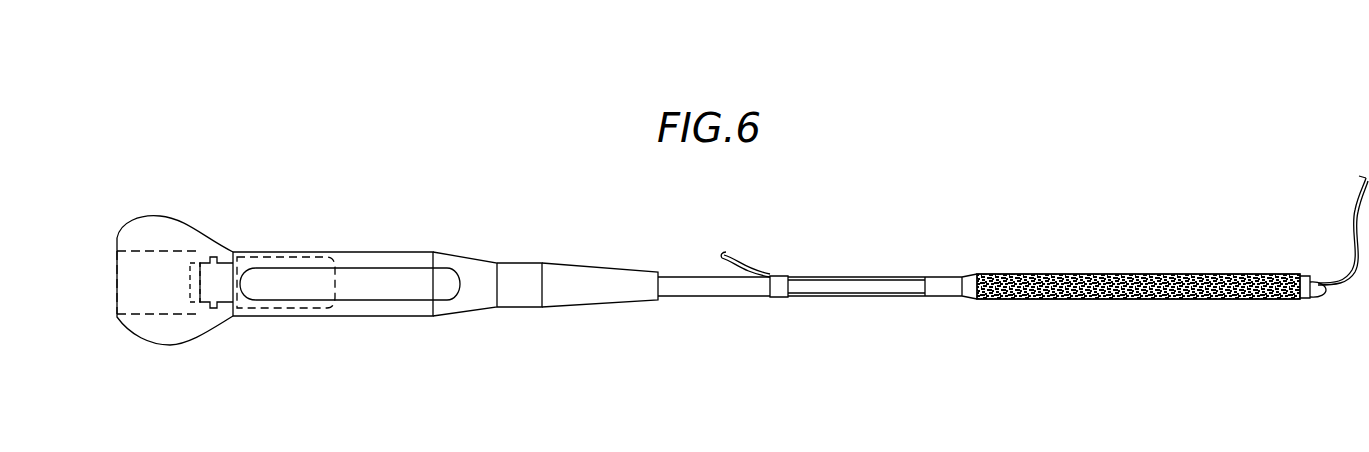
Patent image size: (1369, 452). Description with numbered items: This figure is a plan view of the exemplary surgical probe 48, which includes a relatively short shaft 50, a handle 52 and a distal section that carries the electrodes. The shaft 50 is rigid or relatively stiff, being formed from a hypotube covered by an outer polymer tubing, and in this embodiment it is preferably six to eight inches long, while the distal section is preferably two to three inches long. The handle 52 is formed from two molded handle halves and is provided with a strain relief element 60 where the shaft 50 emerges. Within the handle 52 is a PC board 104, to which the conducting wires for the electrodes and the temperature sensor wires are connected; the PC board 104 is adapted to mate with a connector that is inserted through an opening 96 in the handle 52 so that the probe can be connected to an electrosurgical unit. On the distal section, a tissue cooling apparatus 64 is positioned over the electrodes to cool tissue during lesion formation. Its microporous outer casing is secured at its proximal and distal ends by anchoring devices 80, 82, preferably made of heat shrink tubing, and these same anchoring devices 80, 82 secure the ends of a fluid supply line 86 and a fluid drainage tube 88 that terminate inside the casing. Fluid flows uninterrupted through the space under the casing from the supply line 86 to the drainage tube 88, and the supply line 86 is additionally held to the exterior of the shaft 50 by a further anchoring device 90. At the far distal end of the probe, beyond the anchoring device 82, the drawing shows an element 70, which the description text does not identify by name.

The surgical probe 48 is at (978, 160).
The shaft 50 is at (857, 297).
The handle 52 is at (384, 318).
The strain relief element 60 is at (597, 308).
The tissue cooling apparatus 64 is at (1178, 300).
The distal tip 70 is at (1323, 300).
The anchoring device 80 is at (971, 273).
The anchoring device 82 is at (1302, 275).
The fluid supply line 86 is at (860, 276).
The fluid drainage tube 88 is at (1350, 225).
The anchoring device 90 is at (778, 298).
The opening 96 is at (105, 298).
The PC board 104 is at (225, 262).